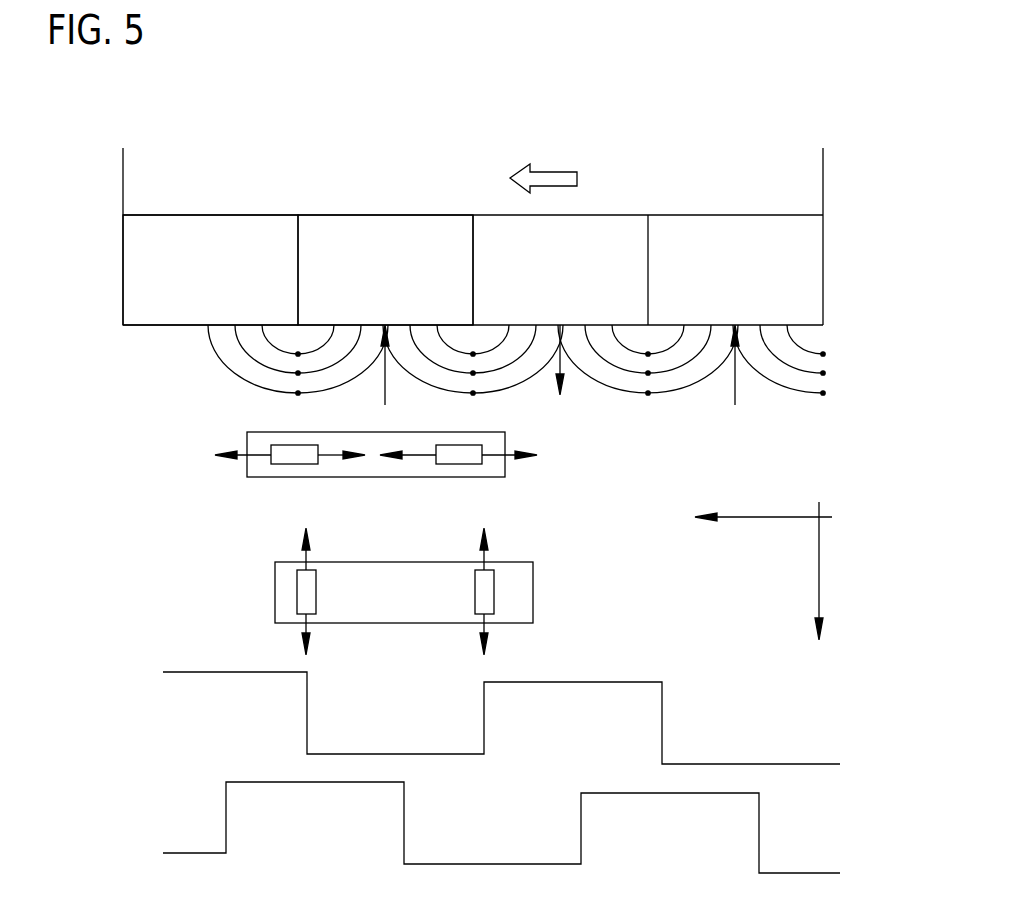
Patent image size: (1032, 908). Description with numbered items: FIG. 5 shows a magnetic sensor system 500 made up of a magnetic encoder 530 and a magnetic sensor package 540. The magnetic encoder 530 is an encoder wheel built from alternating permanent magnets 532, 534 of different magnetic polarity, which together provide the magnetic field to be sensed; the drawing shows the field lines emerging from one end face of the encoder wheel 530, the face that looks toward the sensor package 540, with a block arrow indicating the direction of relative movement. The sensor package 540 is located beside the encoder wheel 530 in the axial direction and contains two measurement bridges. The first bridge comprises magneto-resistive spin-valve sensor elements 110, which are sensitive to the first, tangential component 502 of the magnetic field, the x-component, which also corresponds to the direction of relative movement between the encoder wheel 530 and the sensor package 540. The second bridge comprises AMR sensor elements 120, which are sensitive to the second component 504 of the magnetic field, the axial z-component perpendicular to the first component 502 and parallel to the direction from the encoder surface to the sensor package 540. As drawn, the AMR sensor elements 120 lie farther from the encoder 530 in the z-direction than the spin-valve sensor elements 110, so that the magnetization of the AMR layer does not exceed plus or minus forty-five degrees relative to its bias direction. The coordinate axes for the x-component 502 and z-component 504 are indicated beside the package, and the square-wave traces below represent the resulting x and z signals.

The magnetic sensor system 500 is at (732, 125).
The magnetic encoder 530 is at (836, 250).
The permanent magnet 532 is at (216, 230).
The permanent magnet 534 is at (315, 230).
The magnetic sensor package 540 is at (155, 503).
The magneto-resistive spin-valve sensor element 110 is at (203, 435).
The AMR sensor element 120 is at (252, 590).
The first component (x-component) of the magnetic field 502 is at (795, 515).
The second component (z-component) of the magnetic field 504 is at (820, 538).